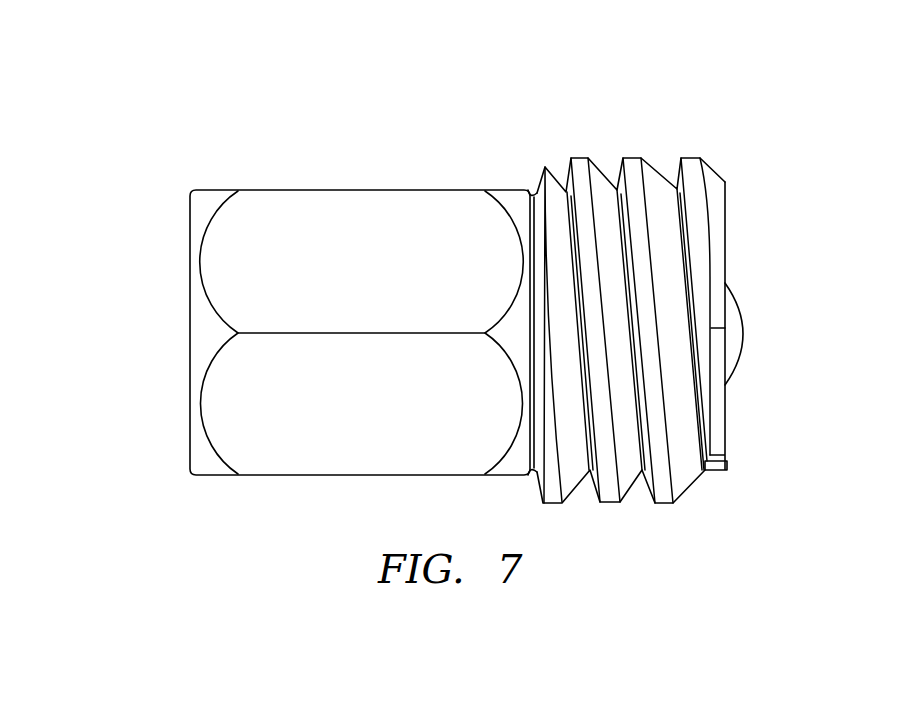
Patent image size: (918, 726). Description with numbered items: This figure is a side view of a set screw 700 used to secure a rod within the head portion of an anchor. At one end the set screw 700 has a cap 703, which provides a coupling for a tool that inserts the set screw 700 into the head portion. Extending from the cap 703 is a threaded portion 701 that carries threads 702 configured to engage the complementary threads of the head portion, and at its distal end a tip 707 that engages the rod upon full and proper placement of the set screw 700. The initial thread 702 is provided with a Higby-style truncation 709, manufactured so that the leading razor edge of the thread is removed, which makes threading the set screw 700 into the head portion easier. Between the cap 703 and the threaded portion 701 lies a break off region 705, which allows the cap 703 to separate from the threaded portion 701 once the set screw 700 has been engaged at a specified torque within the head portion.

The set screw 700 is at (162, 42).
The threaded portion 701 is at (658, 110).
The threads 702 is at (687, 157).
The cap 703 is at (293, 195).
The break off region 705 is at (535, 195).
The tip 707 is at (745, 327).
The Higby-style truncation 709 is at (717, 342).